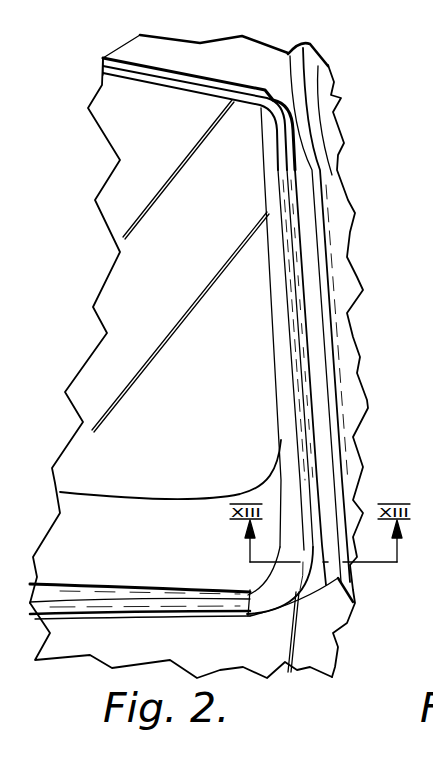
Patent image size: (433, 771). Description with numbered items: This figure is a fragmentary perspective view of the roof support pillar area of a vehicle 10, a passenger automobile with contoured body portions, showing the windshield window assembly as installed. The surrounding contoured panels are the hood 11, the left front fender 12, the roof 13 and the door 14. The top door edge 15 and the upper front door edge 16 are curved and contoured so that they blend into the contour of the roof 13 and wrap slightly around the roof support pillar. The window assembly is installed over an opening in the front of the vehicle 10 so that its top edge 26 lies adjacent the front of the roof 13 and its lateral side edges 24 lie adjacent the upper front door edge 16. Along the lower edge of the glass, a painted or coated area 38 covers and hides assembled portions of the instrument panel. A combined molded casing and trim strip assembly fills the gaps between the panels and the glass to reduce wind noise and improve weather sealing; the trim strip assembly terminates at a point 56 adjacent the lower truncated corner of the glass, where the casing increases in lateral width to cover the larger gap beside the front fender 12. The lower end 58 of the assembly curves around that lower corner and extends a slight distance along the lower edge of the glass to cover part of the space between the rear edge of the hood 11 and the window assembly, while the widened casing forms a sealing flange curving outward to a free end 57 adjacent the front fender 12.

The vehicle 10 is at (216, 64).
The hood 11 is at (175, 643).
The left front fender 12 is at (328, 621).
The roof 13 is at (242, 50).
The door 14 is at (313, 260).
The top door edge 15 is at (288, 50).
The upper front door edge 16 is at (293, 150).
The lateral side edges 24 is at (307, 307).
The top edge 26 is at (123, 73).
The painted or coated area 38 is at (110, 520).
The terminal point of trim strip assembly 56 is at (305, 530).
The free end 57 is at (353, 601).
The lower end 58 is at (263, 608).